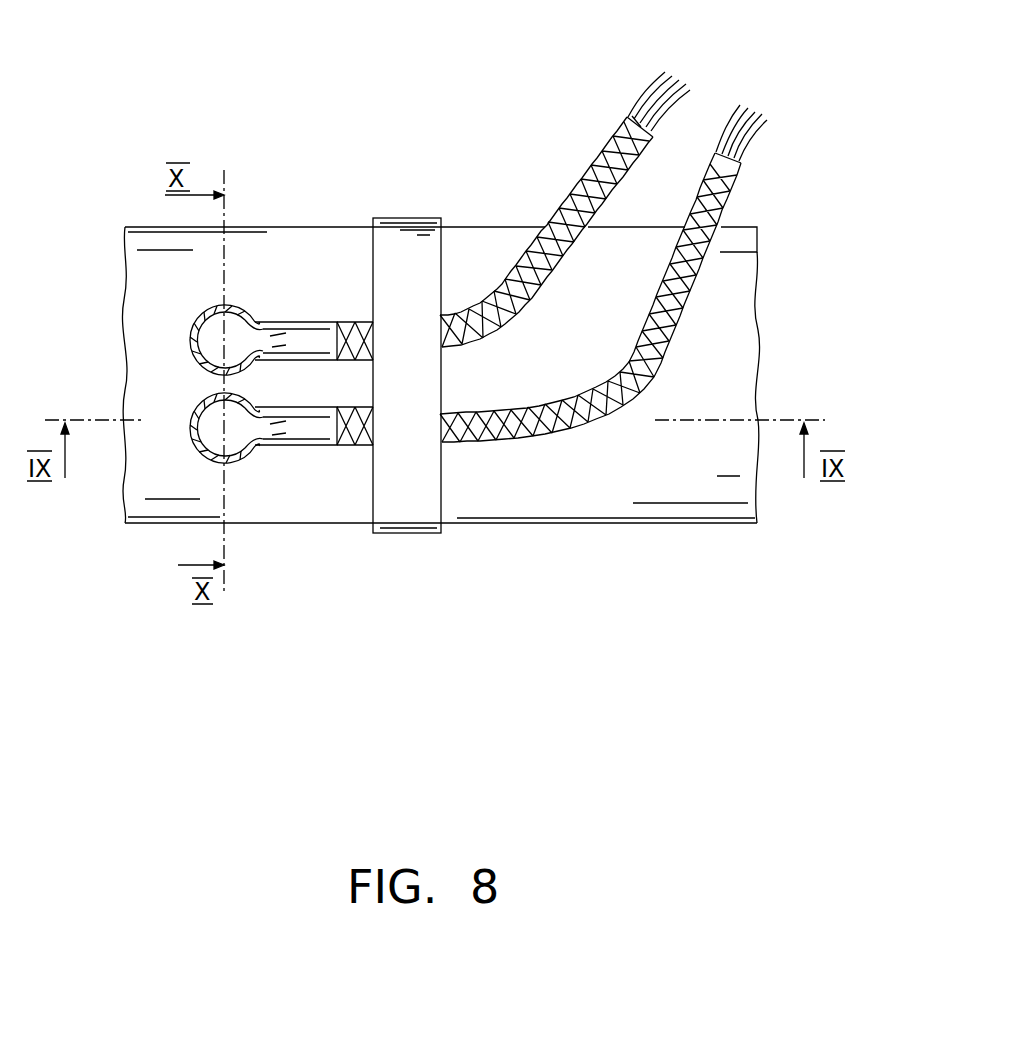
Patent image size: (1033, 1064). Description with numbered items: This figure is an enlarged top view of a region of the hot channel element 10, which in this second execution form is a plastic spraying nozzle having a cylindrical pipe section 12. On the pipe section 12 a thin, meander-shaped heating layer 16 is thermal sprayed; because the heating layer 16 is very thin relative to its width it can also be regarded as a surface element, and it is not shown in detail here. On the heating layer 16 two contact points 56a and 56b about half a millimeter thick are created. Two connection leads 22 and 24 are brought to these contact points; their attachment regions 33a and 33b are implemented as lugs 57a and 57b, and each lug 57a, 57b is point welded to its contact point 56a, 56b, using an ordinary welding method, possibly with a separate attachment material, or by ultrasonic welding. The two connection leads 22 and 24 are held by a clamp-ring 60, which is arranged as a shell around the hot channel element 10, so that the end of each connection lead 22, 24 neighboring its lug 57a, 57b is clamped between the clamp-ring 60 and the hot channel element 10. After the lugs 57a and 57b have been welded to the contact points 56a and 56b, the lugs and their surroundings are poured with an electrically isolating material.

The hot channel element 10 is at (473, 182).
The cylindrical pipe section 12 is at (132, 233).
The heating layer 16 is at (146, 523).
The connection lead 22 is at (622, 124).
The connection lead 24 is at (745, 183).
The attachment region 33a is at (225, 528).
The attachment region 33b is at (234, 240).
The contact point 56a is at (238, 462).
The contact point 56b is at (238, 308).
The lug 57a is at (255, 455).
The lug 57b is at (214, 306).
The clamp-ring 60 is at (393, 240).